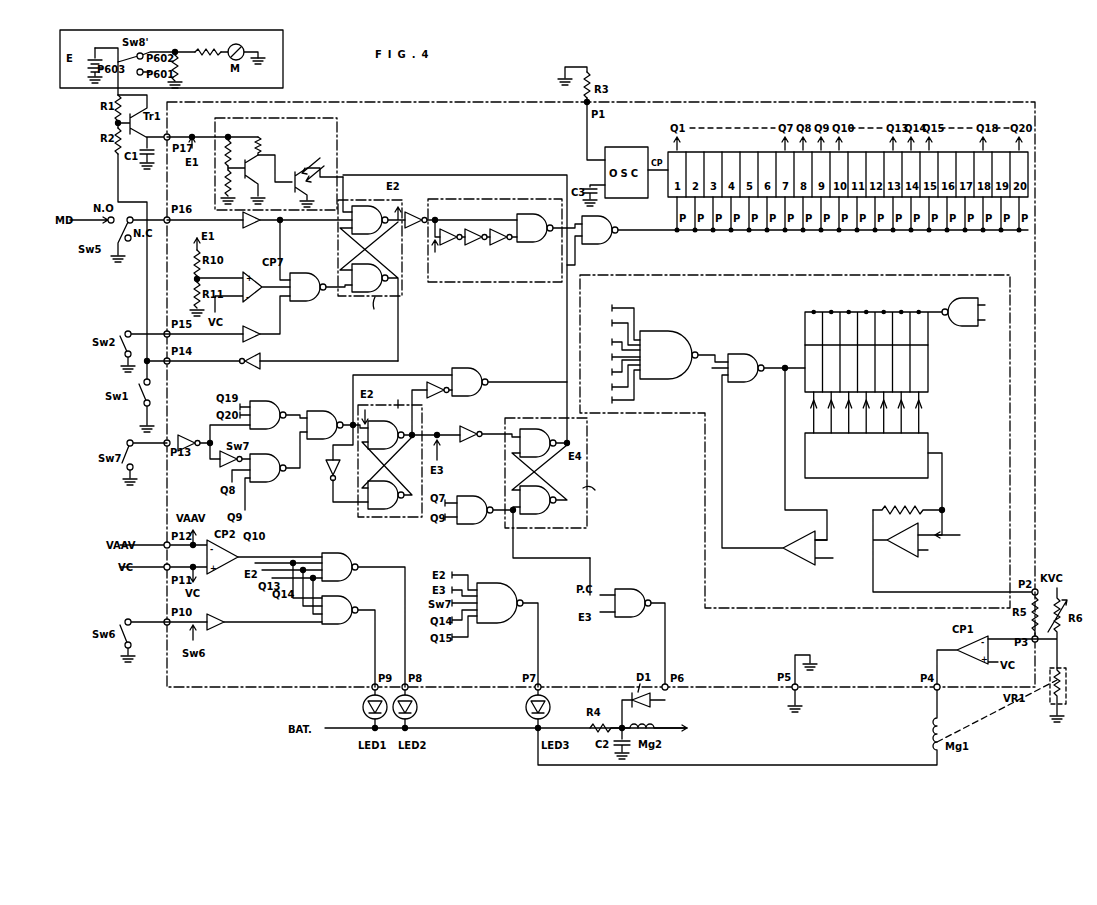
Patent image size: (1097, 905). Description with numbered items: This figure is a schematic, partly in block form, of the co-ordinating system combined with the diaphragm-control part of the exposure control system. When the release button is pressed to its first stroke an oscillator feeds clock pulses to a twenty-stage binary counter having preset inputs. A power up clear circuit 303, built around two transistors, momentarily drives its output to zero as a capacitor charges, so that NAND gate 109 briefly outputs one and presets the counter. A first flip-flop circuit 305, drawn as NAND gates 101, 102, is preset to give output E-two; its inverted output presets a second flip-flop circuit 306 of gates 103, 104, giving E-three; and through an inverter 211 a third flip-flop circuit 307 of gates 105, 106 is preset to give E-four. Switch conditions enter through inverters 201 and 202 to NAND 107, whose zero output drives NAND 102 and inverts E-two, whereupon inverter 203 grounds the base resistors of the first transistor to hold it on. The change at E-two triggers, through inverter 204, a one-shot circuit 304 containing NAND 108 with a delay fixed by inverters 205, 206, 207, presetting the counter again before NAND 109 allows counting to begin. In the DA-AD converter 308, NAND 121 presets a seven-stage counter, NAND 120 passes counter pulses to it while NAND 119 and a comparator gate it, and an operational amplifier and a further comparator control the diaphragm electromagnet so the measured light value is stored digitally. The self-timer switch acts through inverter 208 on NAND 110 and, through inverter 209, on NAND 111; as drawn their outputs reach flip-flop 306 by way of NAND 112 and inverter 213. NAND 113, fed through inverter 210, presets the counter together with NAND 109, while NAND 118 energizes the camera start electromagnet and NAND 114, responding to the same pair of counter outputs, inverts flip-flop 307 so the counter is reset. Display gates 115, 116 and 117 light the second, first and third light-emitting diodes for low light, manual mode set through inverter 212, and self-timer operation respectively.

The NAND gate of flip-flop 305 101 is at (370, 220).
The NAND gate 102 is at (370, 278).
The NAND gate of flip-flop 306 103 is at (386, 435).
The NAND gate of flip-flop 306 104 is at (386, 495).
The NAND gate of flip-flop 307 105 is at (538, 443).
The NAND gate of flip-flop 307 106 is at (538, 500).
The NAND gate 107 is at (321, 287).
The NAND gate 108 is at (535, 228).
The NAND gate 109 is at (585, 240).
The NAND gate 110 is at (268, 415).
The NAND gate 111 is at (268, 468).
The NAND gate 112 is at (325, 425).
The NAND gate 113 is at (470, 382).
The NAND gate 114 is at (469, 510).
The NAND gate 115 is at (340, 567).
The NAND gate 116 is at (340, 610).
The NAND gate 117 is at (500, 603).
The NAND gate 118 is at (625, 603).
The NAND gate 119 is at (669, 355).
The NAND gate 120 is at (746, 368).
The NAND gate 121 is at (963, 312).
The inverter 201 is at (251, 229).
The inverter 202 is at (251, 326).
The inverter 203 is at (251, 369).
The inverter 204 is at (416, 229).
The inverter 205 is at (453, 248).
The inverter 206 is at (478, 249).
The inverter 207 is at (504, 246).
The inverter 208 is at (186, 435).
The inverter 209 is at (220, 467).
The inverter 210 is at (441, 396).
The inverter 211 is at (468, 425).
The inverter 212 is at (216, 629).
The inverter 213 is at (321, 472).
The power up clear circuit 303 is at (255, 164).
The one-shot circuit 304 is at (494, 240).
The first flip-flop circuit 305 is at (371, 280).
The second flip-flop circuit 306 is at (409, 450).
The third flip-flop circuit 307 is at (565, 473).
The DA-AD converter 308 is at (807, 441).